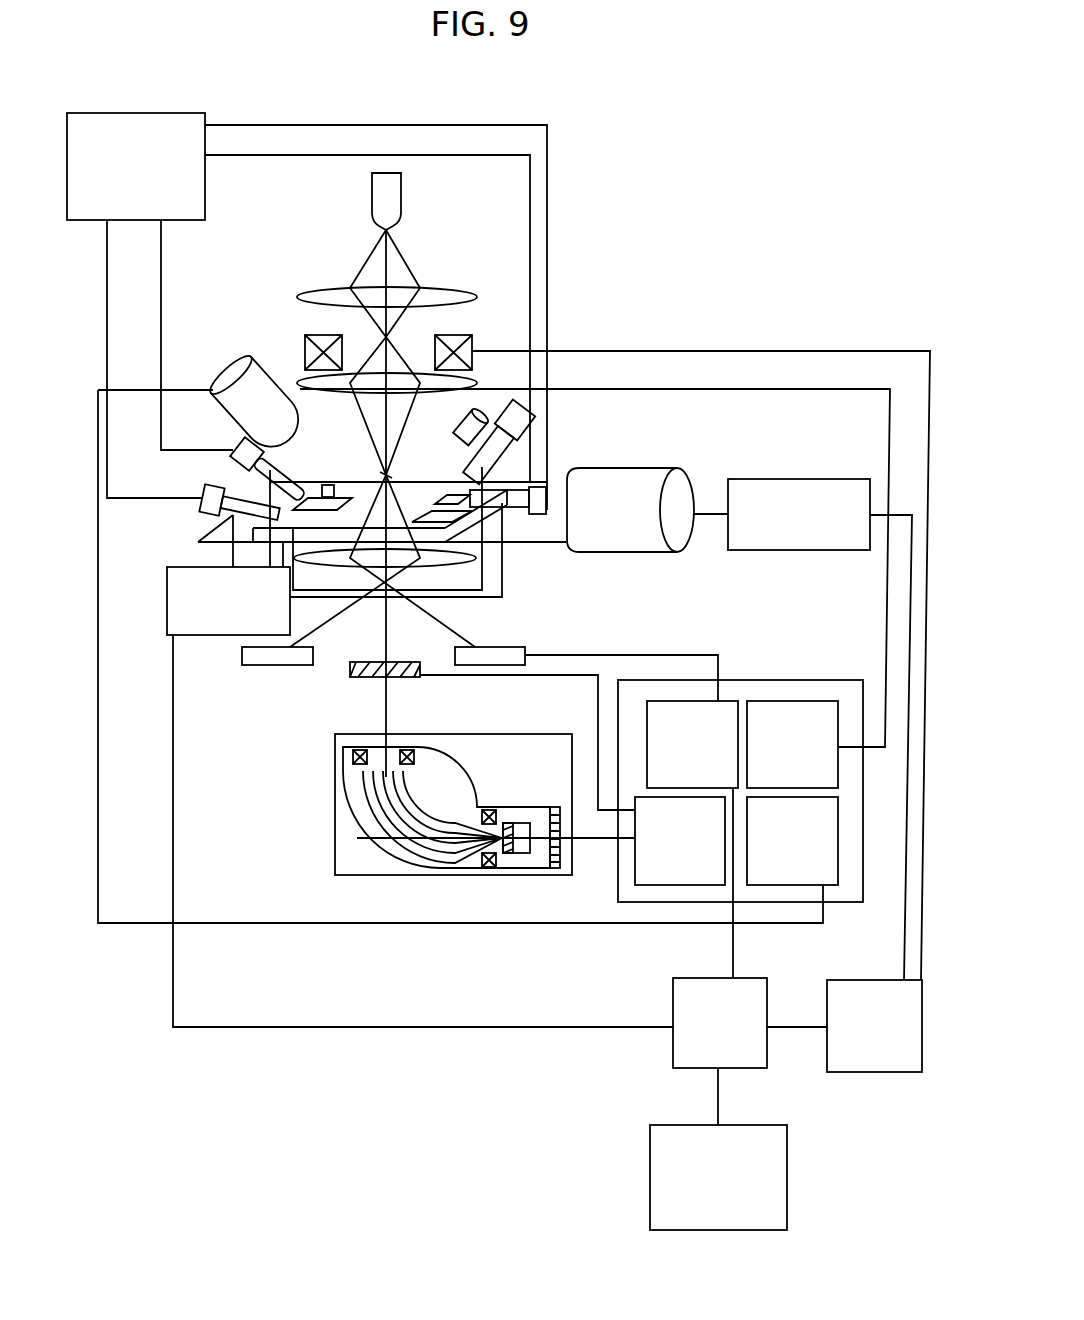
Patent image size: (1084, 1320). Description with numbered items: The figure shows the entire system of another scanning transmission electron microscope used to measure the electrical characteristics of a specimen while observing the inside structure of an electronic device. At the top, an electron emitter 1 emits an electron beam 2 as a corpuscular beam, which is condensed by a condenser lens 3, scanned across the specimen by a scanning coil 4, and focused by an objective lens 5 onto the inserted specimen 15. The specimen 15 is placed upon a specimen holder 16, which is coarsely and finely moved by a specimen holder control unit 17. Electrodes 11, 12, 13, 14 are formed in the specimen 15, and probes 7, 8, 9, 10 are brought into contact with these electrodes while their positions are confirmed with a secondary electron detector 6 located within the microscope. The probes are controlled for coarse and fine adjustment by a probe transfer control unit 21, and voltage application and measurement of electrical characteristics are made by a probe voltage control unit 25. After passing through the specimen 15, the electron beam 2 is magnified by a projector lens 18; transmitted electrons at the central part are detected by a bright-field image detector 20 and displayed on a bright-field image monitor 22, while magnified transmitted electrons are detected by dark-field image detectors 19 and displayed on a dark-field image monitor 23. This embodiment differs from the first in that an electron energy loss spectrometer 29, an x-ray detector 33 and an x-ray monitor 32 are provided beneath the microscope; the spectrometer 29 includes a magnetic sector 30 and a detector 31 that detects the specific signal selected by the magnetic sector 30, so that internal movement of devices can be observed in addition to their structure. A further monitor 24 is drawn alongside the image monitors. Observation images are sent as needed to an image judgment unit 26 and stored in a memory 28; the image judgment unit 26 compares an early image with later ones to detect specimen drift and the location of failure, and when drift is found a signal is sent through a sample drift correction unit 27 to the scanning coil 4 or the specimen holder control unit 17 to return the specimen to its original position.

The electron emitter 1 is at (388, 197).
The electron beam 2 is at (387, 260).
The condenser lens 3 is at (450, 297).
The scanning coil 4 is at (461, 348).
The objective lens 5 is at (305, 382).
The secondary electron detector 6 is at (240, 382).
The probe 7 is at (522, 439).
The probe 8 is at (512, 510).
The probe 9 is at (275, 466).
The probe 10 is at (243, 500).
The electrode 11 is at (320, 482).
The electrode 12 is at (342, 482).
The electrode 13 is at (428, 512).
The electrode 14 is at (448, 500).
The specimen 15 is at (362, 500).
The specimen holder 16 is at (624, 525).
The specimen holder control unit 17 is at (797, 527).
The projector lens 18 is at (425, 558).
The dark-field image detectors 19 is at (495, 657).
The bright-field image detector 20 is at (373, 662).
The probe transfer control unit 21 is at (143, 155).
The bright-field image monitor 22 is at (651, 840).
The dark-field image monitor 23 is at (730, 742).
The processing unit 24 is at (817, 858).
The probe voltage control unit 25 is at (197, 605).
The image judgment unit 26 is at (691, 1010).
The sample drift correction unit 27 is at (855, 995).
The memory 28 is at (680, 1183).
The electron energy loss spectrometer 29 is at (352, 876).
The magnetic sector 30 is at (357, 838).
The detector 31 is at (520, 846).
The x-ray monitor 32 is at (813, 735).
The x-ray detector 33 is at (468, 432).